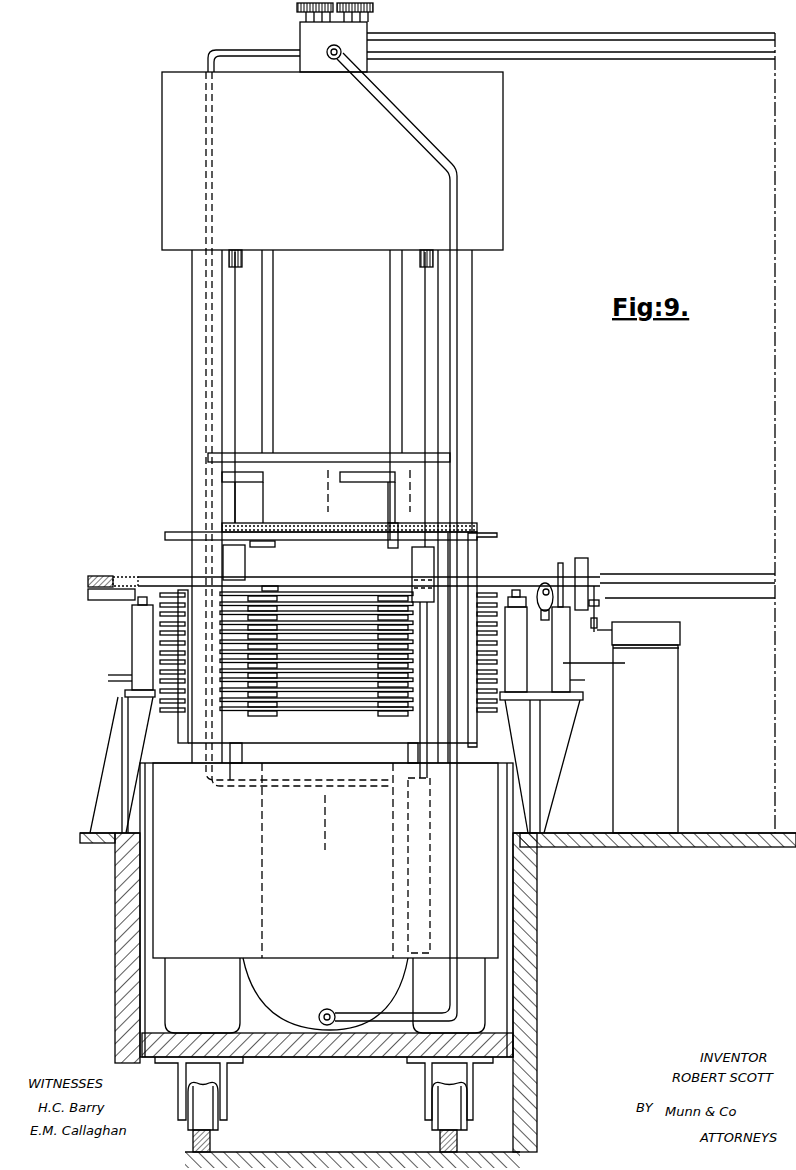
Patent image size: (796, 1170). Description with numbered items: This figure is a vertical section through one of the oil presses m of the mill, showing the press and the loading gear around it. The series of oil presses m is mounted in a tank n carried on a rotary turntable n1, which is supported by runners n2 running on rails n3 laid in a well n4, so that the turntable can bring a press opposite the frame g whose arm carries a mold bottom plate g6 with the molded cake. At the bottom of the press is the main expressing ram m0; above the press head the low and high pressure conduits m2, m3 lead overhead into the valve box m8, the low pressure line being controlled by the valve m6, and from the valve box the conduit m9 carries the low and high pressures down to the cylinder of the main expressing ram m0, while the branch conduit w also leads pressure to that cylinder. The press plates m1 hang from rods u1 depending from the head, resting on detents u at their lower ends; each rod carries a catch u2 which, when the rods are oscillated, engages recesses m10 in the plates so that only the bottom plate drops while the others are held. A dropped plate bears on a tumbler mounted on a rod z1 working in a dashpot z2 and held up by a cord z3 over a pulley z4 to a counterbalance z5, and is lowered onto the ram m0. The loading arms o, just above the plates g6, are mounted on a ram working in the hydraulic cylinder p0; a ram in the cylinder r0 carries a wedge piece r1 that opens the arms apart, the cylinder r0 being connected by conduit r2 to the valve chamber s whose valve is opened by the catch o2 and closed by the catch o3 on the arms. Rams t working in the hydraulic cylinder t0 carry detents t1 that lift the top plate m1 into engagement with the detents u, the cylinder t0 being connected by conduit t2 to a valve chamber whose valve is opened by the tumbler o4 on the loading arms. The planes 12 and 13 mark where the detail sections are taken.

The branch conduit w is at (262, 50).
The valve box m8 is at (367, 34).
The valve m6 is at (337, 13).
The conduit m9 is at (382, 103).
The high pressure conduit m3 is at (640, 40).
The low pressure conduit m2 is at (700, 60).
The pulley z4 is at (240, 252).
The cord z3 is at (238, 325).
The rod u1 is at (270, 413).
The section plane 12 is at (312, 660).
The section plane 13 is at (342, 714).
The catch u2 is at (400, 525).
The detent u is at (262, 547).
The counterbalance z5 is at (427, 560).
The rod z1 is at (428, 750).
The loading arm o is at (150, 580).
The hydraulic cylinder p0 is at (715, 574).
The catch o2 is at (273, 590).
The mold bottom plate g6 is at (88, 582).
The frame g is at (106, 600).
The recess m10 is at (255, 712).
The plate m1 is at (323, 675).
The detent t1 is at (504, 597).
The ram t is at (517, 590).
The conduit t2 is at (533, 682).
The hydraulic cylinder t0 is at (517, 683).
The tumbler o4 is at (543, 586).
The wedge piece r1 is at (565, 565).
The catch o3 is at (603, 593).
The valve chamber s is at (673, 630).
The hydraulic cylinder r0 is at (604, 662).
The conduit r2 is at (577, 682).
The oil press m is at (503, 910).
The tank n is at (513, 985).
The main expressing ram m0 is at (275, 760).
The dashpot z2 is at (430, 862).
The well n4 is at (513, 1095).
The rotary turntable n1 is at (497, 1048).
The runner n2 is at (205, 1108).
The rail n3 is at (437, 1137).